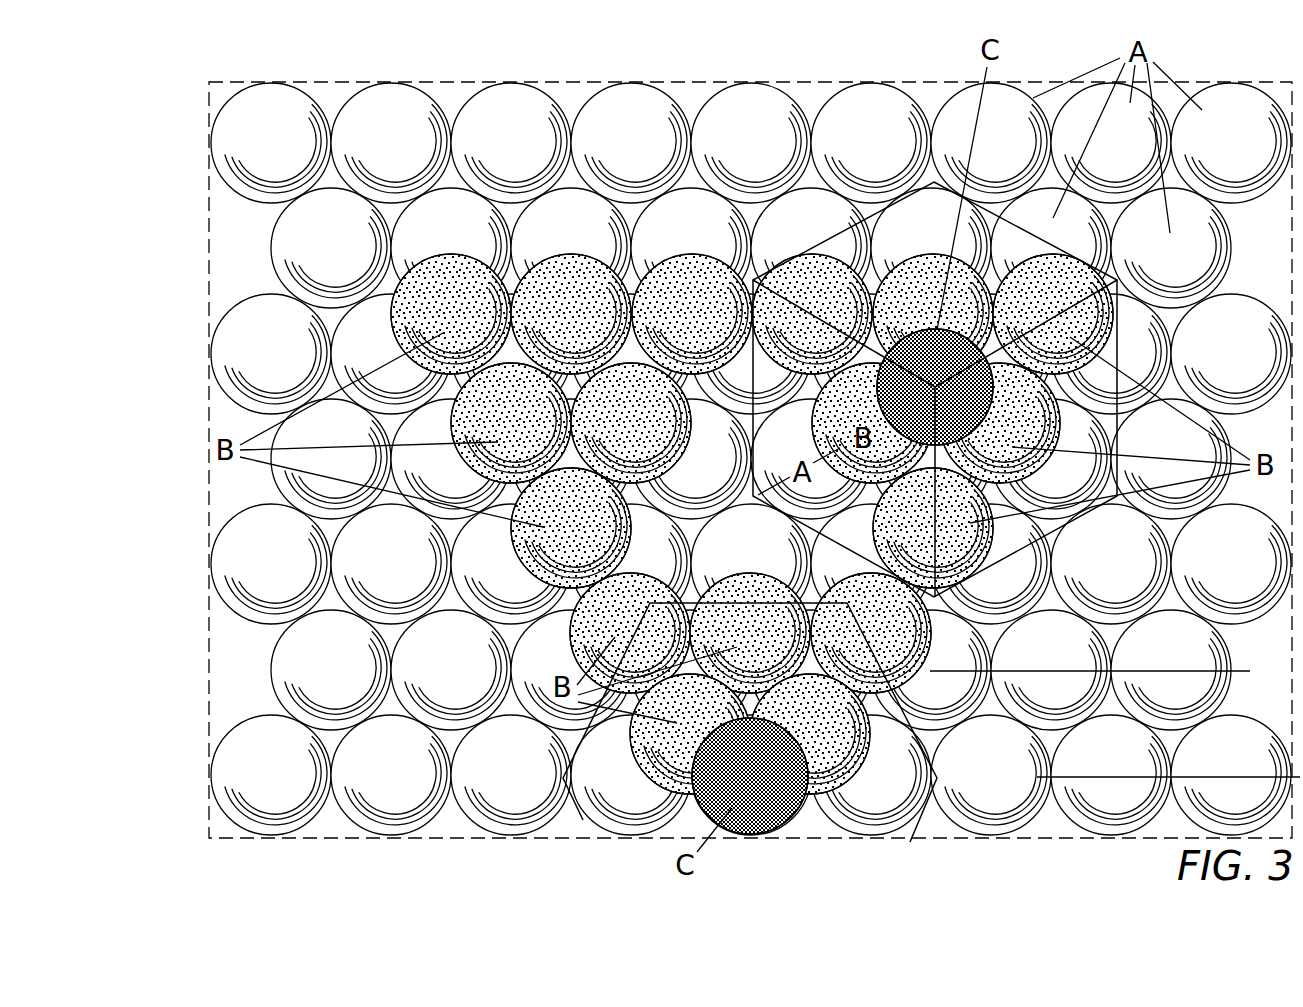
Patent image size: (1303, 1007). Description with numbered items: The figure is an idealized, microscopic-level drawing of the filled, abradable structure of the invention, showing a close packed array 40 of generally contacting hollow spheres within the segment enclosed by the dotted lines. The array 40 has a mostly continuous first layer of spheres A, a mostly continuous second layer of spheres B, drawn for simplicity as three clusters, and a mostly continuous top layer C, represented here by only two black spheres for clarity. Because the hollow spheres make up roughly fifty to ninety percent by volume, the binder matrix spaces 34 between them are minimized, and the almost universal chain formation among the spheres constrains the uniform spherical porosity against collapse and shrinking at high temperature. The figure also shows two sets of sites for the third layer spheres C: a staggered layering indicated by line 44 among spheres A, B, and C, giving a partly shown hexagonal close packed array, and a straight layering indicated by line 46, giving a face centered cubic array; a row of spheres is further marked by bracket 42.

The binder matrix spaces 34 is at (330, 740).
The close packed array 40 is at (757, 61).
The row of particles 42 is at (1232, 777).
The line of staggered layering 44 is at (647, 738).
The line of straight layering 46 is at (817, 433).